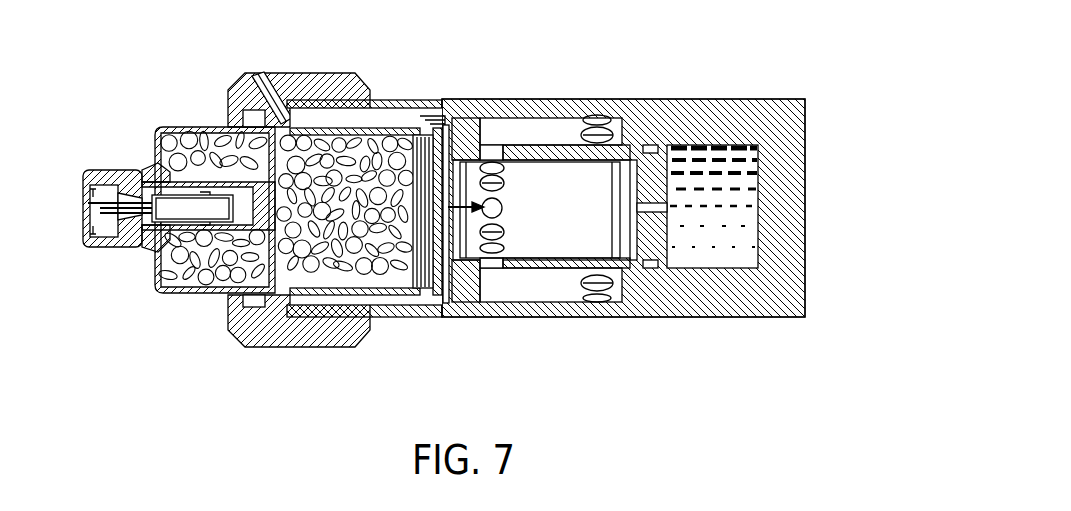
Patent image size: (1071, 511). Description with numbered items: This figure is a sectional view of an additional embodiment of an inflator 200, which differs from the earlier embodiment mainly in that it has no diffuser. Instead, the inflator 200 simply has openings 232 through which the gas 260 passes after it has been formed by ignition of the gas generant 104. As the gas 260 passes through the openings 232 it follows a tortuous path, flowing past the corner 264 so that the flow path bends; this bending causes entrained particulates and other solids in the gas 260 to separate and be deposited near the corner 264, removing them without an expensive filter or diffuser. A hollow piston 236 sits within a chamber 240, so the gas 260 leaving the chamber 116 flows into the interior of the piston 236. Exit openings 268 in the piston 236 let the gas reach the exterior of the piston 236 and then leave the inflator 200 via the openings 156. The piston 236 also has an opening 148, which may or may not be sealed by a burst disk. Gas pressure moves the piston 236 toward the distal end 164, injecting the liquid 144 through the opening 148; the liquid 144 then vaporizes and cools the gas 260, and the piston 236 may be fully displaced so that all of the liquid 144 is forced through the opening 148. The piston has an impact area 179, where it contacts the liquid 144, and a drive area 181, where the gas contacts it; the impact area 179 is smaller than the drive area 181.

The gas generant 104 is at (312, 272).
The chamber 116 is at (333, 128).
The liquid 144 is at (724, 230).
The opening 148 is at (671, 200).
The openings 156 is at (591, 300).
The distal end 164 is at (822, 183).
The impact area 179 is at (677, 227).
The drive area 181 is at (447, 308).
The inflator 200 is at (197, 308).
The openings 232 is at (322, 128).
The piston 236 is at (560, 236).
The chamber 240 is at (677, 285).
The gas 260 is at (477, 120).
The corner 264 is at (450, 110).
The exit openings 268 is at (510, 205).